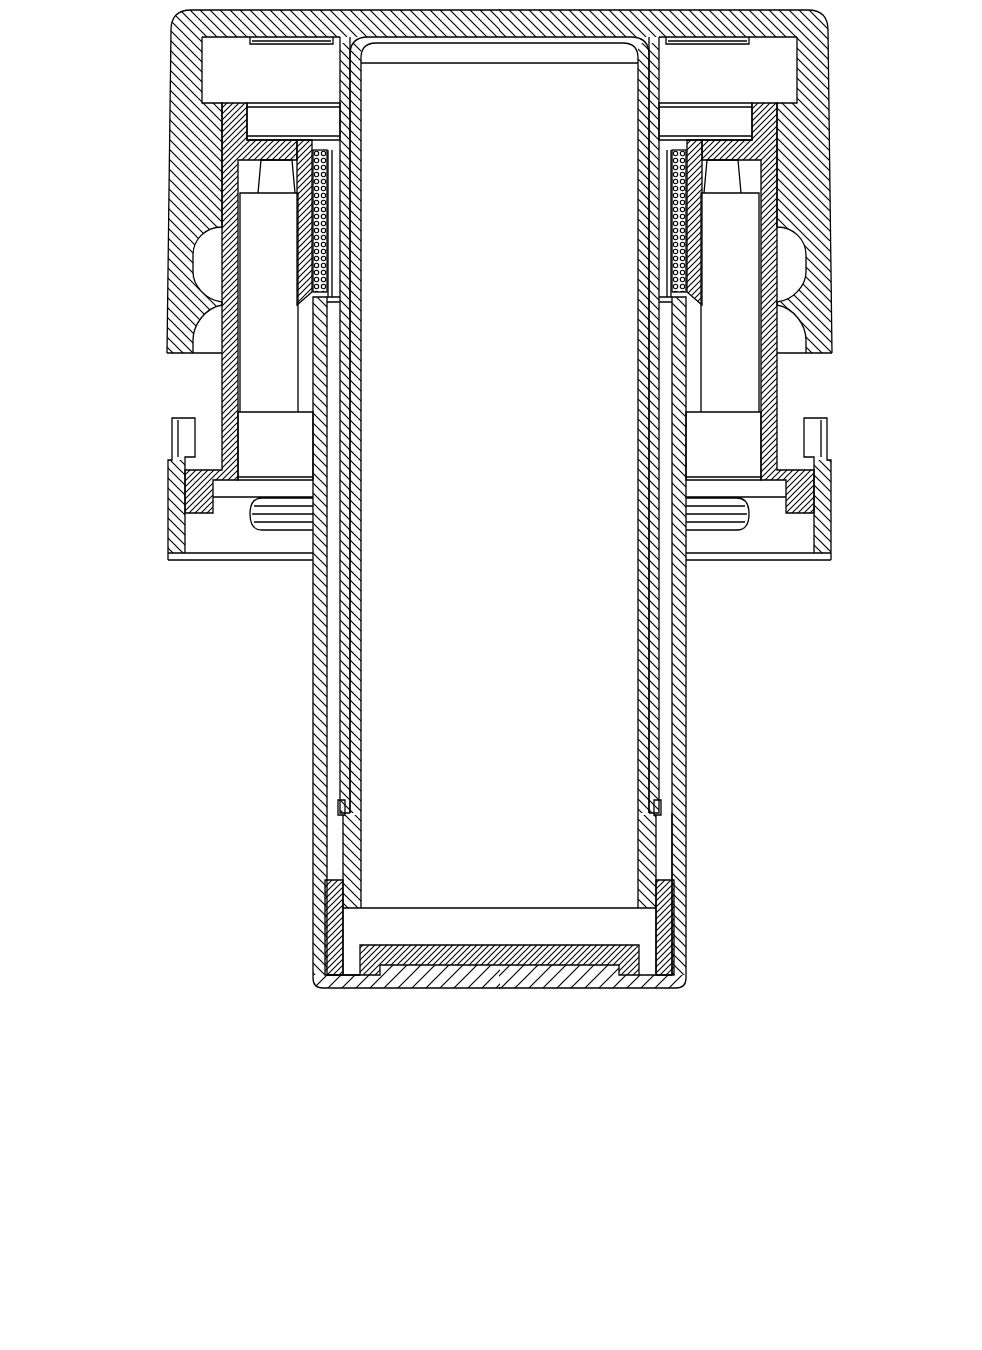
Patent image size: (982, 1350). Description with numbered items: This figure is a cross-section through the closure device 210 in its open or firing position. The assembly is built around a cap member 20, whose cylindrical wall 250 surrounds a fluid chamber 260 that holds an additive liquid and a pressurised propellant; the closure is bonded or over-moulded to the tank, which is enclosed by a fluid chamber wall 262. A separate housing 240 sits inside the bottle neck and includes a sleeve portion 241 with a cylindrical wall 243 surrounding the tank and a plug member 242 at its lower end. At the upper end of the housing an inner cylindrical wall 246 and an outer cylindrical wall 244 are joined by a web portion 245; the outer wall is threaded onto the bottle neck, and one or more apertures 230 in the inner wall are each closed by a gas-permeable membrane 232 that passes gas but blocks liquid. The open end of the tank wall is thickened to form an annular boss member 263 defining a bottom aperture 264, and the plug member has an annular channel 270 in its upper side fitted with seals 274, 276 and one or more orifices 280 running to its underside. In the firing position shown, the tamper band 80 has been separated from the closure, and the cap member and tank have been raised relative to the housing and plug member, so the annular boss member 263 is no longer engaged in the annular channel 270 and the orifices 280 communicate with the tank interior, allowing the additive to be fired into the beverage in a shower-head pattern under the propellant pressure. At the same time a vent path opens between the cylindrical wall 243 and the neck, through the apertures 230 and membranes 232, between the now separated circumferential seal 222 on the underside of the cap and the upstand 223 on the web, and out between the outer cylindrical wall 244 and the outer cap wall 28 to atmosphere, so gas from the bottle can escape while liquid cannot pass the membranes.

The cap member 20 is at (146, 378).
The outer cap wall 28 is at (185, 192).
The tamper band 80 is at (168, 507).
The closure device 210 is at (237, 659).
The circumferential seal 222 is at (243, 52).
The upstand 223 is at (227, 100).
The aperture 230 is at (700, 197).
The membrane 232 is at (672, 253).
The housing 240 is at (743, 761).
The sleeve portion 241 is at (678, 823).
The plug member 242 is at (590, 982).
The cylindrical wall 243 is at (683, 650).
The outer cylindrical wall 244 is at (220, 390).
The web portion 245 is at (710, 147).
The inner cylindrical wall 246 is at (303, 230).
The cylindrical wall 250 is at (340, 705).
The fluid chamber 260 is at (543, 456).
The fluid chamber wall 262 is at (350, 710).
The annular boss member 263 is at (343, 862).
The bottom aperture 264 is at (380, 908).
The annular channel 270 is at (645, 973).
The seal 274 is at (362, 977).
The seal 276 is at (332, 952).
The orifice 280 is at (352, 980).